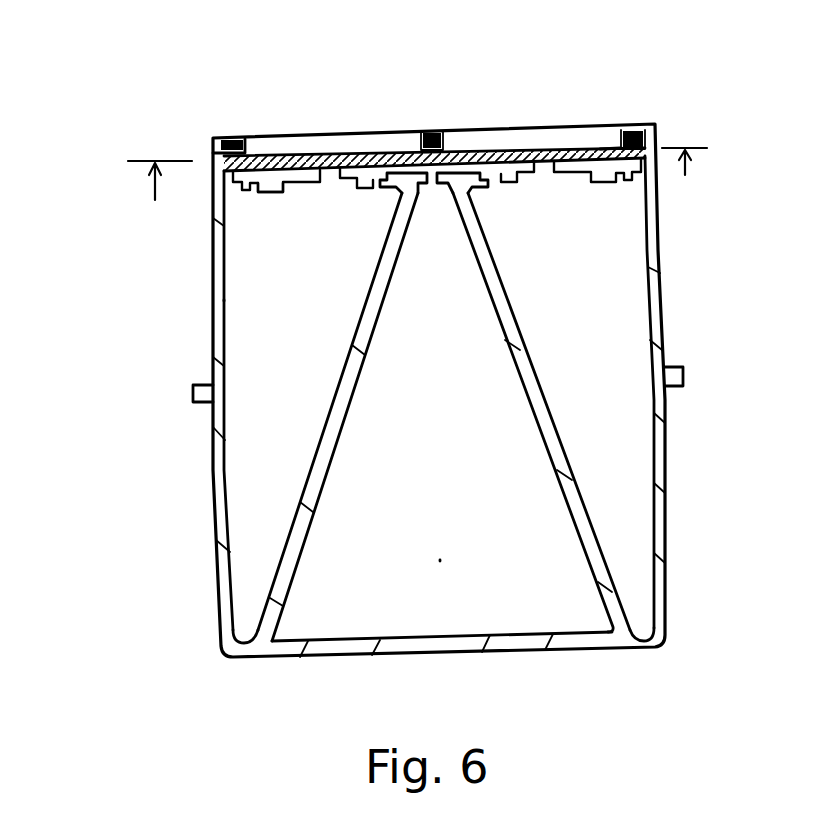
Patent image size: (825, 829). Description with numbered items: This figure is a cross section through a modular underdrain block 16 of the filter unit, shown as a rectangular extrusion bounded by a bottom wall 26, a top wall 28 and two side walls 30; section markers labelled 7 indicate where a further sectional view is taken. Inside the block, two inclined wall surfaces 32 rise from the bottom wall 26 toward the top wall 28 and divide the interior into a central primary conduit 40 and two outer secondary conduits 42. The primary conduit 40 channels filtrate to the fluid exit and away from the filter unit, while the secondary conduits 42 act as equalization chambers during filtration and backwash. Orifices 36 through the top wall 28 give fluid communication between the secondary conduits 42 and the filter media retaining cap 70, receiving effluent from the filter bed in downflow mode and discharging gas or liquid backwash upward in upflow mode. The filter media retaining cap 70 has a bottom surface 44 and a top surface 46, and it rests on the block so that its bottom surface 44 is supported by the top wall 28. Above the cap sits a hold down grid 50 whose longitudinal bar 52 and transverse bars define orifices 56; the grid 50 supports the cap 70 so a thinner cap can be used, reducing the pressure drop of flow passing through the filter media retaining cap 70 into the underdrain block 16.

The section line 7- 7 is at (421, 182).
The modular underdrain block 16 is at (716, 330).
The bottom wall 26 is at (437, 640).
The top wall 28 is at (282, 190).
The side walls 30 is at (212, 337).
The inclined wall surfaces 32 is at (507, 352).
The orifices 36 is at (372, 190).
The primary conduit 40 is at (445, 518).
The secondary conduits 42 is at (305, 296).
The bottom surface 44 is at (385, 152).
The top surface 46 is at (482, 151).
The hold down grid 50 is at (625, 130).
The longitudinal bar 52 is at (425, 131).
The orifices 56 is at (620, 140).
The filter media retaining cap 70 is at (272, 150).